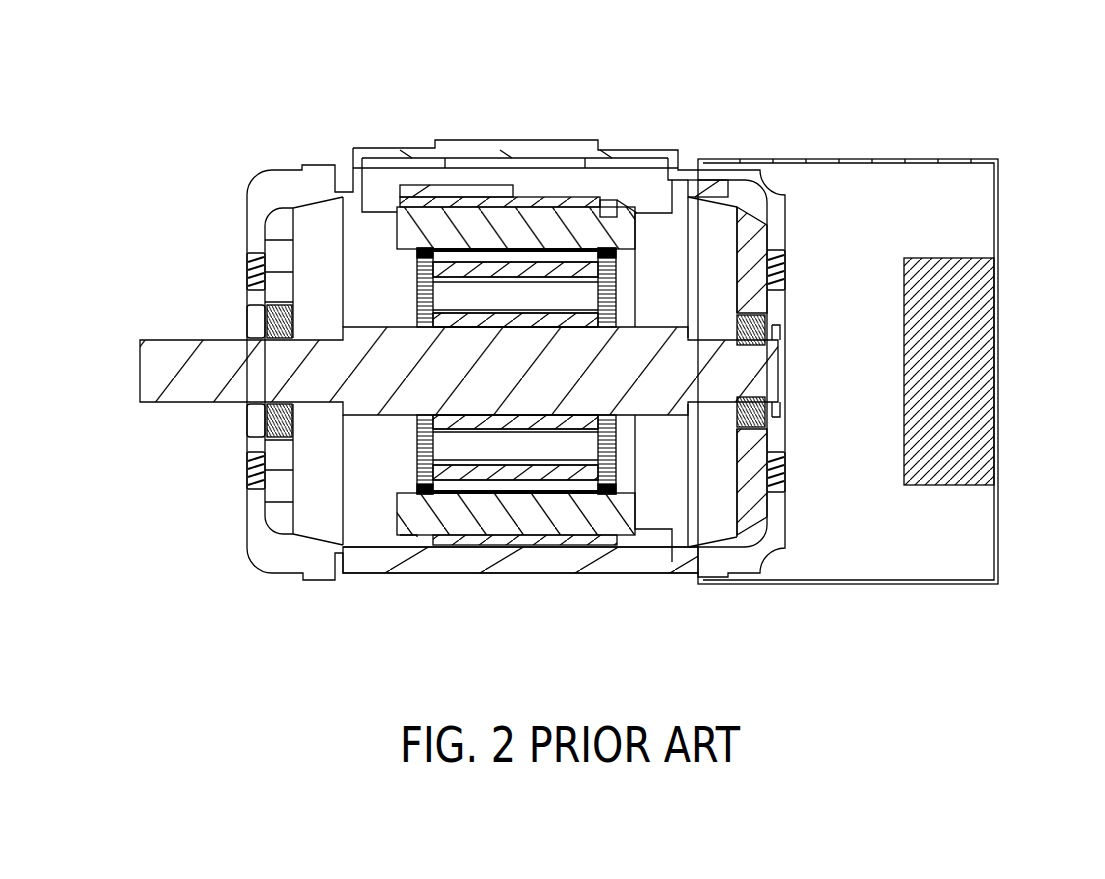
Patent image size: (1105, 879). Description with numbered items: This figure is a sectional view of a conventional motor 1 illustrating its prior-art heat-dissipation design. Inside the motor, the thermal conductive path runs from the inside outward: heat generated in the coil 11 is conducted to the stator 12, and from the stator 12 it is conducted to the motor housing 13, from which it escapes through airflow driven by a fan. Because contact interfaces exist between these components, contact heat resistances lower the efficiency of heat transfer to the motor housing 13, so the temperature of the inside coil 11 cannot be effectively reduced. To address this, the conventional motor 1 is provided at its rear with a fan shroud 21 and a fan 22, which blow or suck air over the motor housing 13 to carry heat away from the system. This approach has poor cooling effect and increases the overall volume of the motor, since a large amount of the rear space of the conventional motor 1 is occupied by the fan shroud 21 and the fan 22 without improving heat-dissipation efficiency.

The conventional motor 1 is at (462, 375).
The coil 11 is at (422, 262).
The stator 12 is at (538, 200).
The motor housing 13 is at (432, 565).
The fan shroud 21 is at (907, 187).
The fan 22 is at (967, 325).